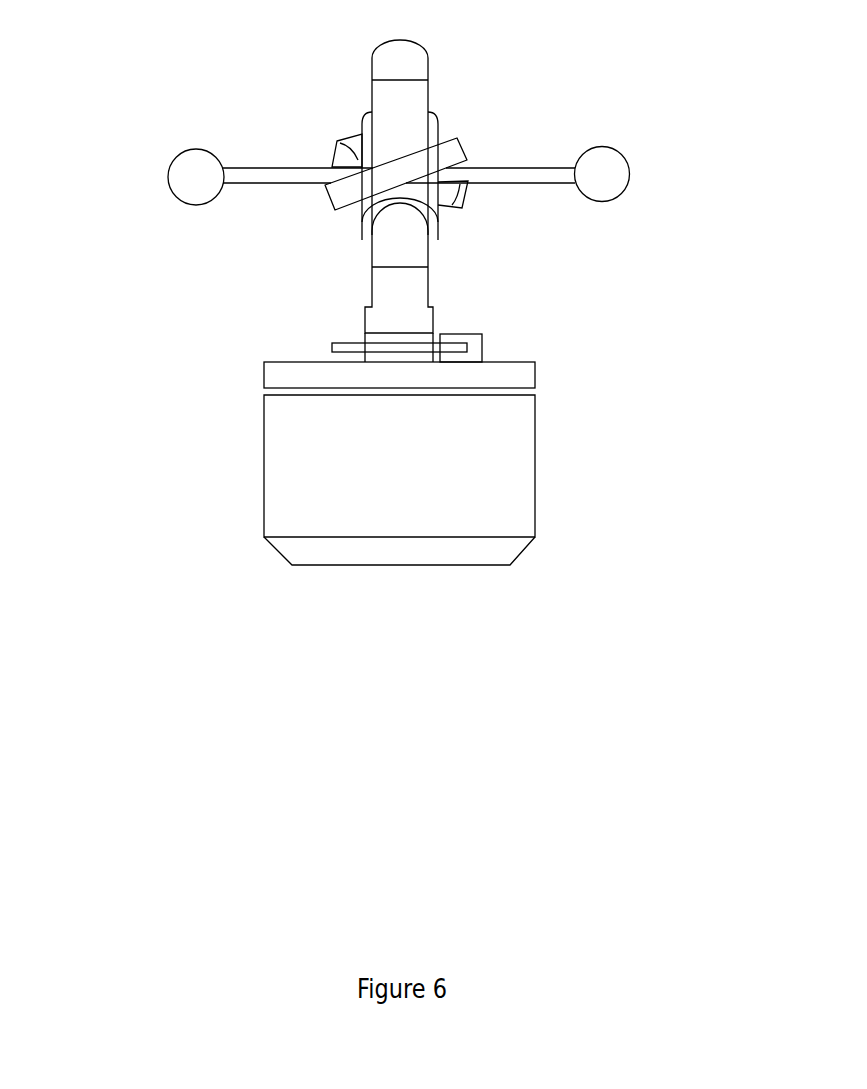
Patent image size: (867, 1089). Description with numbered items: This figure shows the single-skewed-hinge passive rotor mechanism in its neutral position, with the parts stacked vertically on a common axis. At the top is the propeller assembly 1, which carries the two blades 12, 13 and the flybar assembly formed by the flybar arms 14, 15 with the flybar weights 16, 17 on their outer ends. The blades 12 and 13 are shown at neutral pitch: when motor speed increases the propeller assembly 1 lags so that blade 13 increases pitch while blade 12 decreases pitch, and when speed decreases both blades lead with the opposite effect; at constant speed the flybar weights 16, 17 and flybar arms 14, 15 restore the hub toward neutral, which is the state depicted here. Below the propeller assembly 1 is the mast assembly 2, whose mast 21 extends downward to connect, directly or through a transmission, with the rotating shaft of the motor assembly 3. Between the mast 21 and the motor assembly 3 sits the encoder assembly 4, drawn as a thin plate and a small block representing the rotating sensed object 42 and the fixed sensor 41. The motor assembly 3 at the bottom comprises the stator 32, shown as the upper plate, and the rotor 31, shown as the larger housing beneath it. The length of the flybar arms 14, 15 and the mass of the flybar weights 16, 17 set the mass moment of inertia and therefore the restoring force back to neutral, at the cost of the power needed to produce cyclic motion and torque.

The propeller assembly 1 is at (401, 156).
The blade 12 is at (336, 149).
The blade 13 is at (455, 150).
The flybar arm 14 is at (275, 184).
The flybar arm 15 is at (506, 184).
The flybar weight 16 is at (168, 178).
The flybar weight 17 is at (745, 162).
The mast assembly 2 is at (534, 282).
The mast 21 is at (429, 288).
The encoder assembly 4 is at (398, 327).
The fixed sensor 41 is at (483, 352).
The rotating sensed object 42 is at (330, 346).
The motor assembly 3 is at (398, 463).
The rotor 31 is at (537, 465).
The stator 32 is at (263, 376).